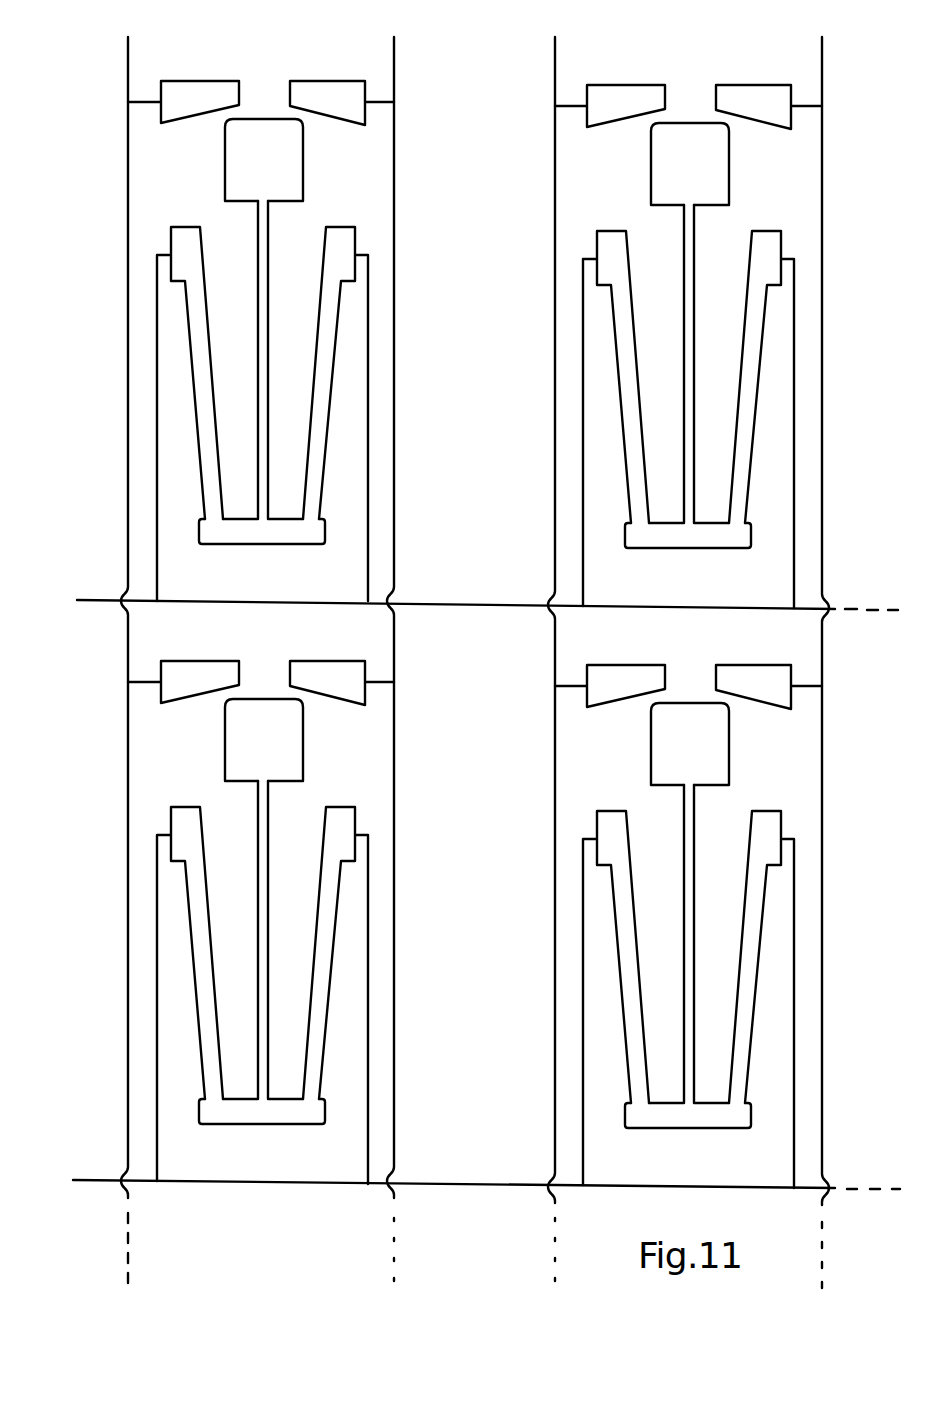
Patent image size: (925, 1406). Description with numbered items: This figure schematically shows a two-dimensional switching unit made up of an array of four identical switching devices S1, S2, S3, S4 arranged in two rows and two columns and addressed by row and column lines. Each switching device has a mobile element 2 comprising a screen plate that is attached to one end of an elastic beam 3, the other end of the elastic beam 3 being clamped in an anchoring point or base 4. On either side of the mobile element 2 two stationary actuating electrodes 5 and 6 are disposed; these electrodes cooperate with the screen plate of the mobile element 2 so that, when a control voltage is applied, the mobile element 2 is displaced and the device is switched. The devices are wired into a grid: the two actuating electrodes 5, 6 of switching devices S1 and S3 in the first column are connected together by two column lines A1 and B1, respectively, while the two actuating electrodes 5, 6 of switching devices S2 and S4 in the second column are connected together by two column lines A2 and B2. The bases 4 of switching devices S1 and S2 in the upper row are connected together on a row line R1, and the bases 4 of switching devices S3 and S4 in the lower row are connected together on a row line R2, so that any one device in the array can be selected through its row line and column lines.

The mobile element 2 is at (290, 152).
The elastic beam 3 is at (264, 306).
The base 4 is at (182, 233).
The actuating electrode 5 is at (181, 103).
The actuating electrode 6 is at (336, 99).
The column line A1 is at (130, 649).
The column line A2 is at (558, 649).
The column line B1 is at (398, 649).
The column line B2 is at (824, 650).
The row line R1 is at (468, 589).
The row line R2 is at (469, 1168).
The switching device S1 is at (259, 62).
The switching device S2 is at (685, 66).
The switching device S3 is at (259, 662).
The switching device S4 is at (685, 666).